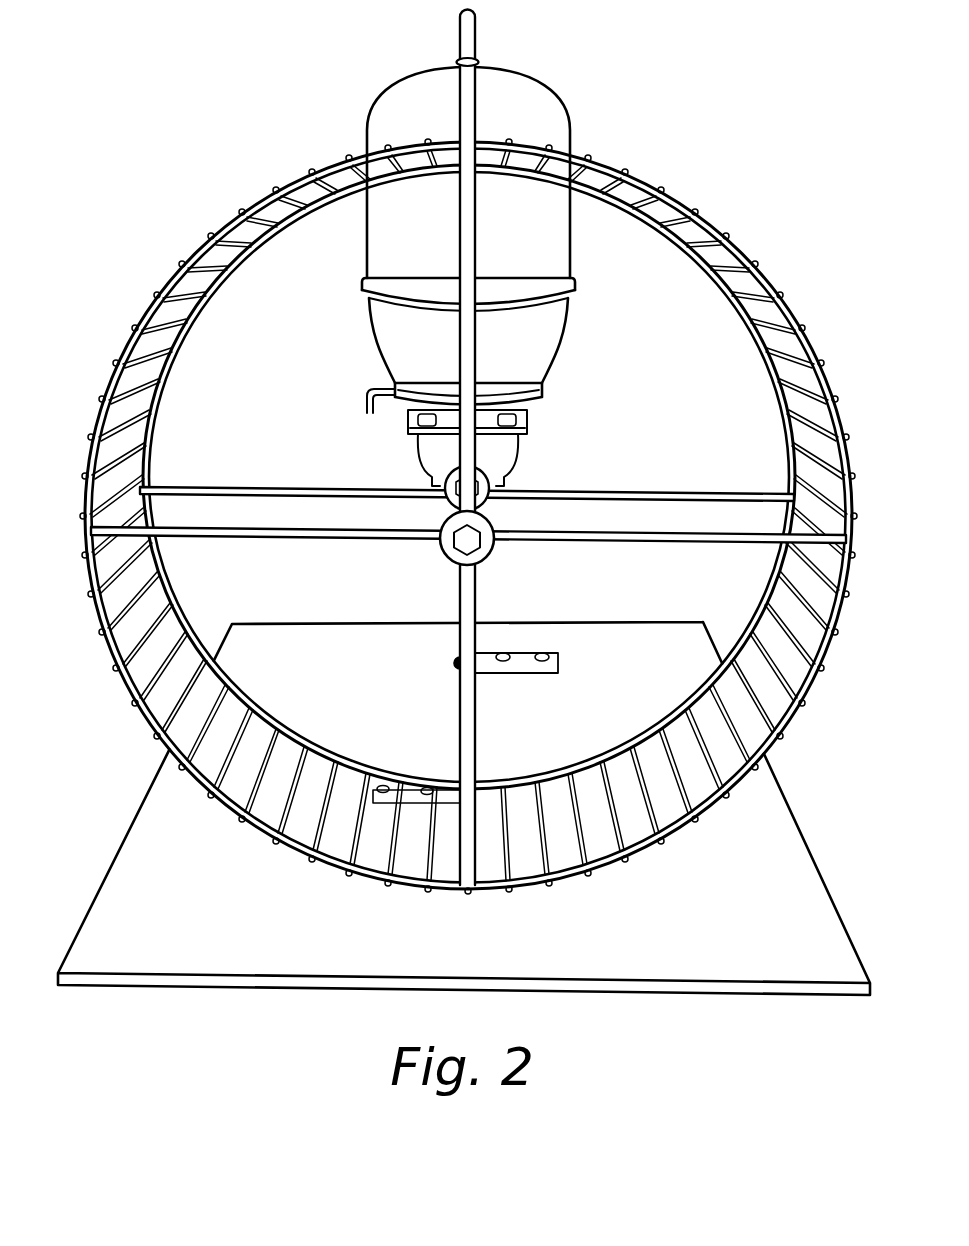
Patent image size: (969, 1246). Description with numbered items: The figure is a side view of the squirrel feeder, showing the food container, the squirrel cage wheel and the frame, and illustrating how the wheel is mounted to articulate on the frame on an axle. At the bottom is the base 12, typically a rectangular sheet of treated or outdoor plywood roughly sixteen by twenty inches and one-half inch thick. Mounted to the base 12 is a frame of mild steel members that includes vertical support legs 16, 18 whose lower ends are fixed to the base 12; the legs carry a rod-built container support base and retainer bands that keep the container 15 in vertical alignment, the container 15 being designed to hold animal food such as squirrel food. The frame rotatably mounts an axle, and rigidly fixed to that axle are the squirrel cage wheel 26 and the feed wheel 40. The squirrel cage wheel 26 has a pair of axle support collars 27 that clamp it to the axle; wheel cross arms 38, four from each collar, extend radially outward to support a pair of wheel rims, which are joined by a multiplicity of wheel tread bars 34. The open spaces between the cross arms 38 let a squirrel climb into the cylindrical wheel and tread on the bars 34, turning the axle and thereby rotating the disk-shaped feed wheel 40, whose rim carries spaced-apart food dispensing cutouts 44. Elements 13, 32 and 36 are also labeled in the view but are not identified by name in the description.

The base 12 is at (666, 925).
The lower container body 13 is at (493, 378).
The container 15 is at (527, 250).
The vertical support leg 16 is at (372, 398).
The vertical support leg 18 is at (458, 710).
The squirrel cage wheel 26 is at (315, 747).
The axle support collars 27 is at (479, 549).
The shaft end collar 32 is at (480, 62).
The wheel tread bars 34 is at (588, 776).
The outer rim 36 is at (260, 828).
The wheel cross arms 38 is at (625, 534).
The feed wheel 40 is at (462, 438).
The feed wheel food dispensing cutouts 44 is at (512, 423).